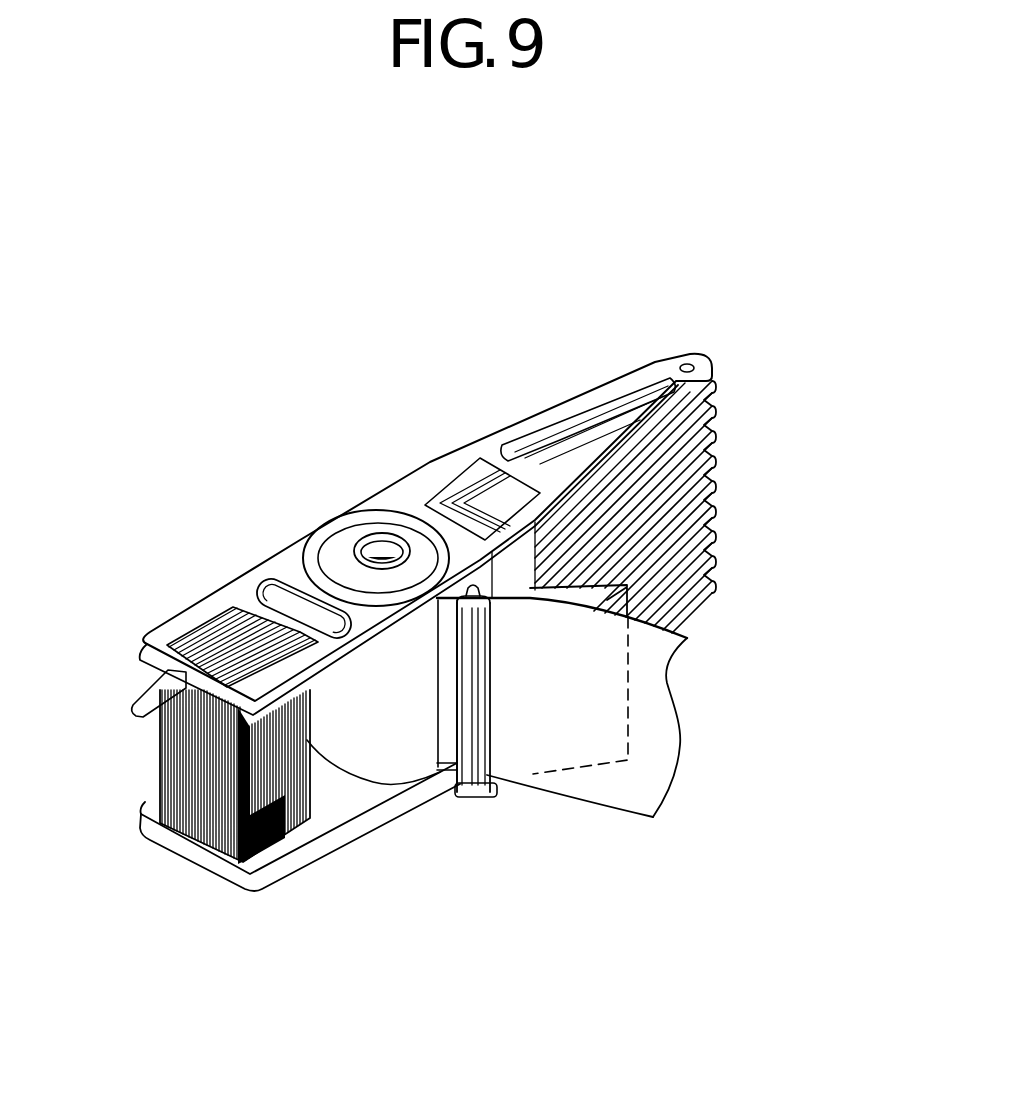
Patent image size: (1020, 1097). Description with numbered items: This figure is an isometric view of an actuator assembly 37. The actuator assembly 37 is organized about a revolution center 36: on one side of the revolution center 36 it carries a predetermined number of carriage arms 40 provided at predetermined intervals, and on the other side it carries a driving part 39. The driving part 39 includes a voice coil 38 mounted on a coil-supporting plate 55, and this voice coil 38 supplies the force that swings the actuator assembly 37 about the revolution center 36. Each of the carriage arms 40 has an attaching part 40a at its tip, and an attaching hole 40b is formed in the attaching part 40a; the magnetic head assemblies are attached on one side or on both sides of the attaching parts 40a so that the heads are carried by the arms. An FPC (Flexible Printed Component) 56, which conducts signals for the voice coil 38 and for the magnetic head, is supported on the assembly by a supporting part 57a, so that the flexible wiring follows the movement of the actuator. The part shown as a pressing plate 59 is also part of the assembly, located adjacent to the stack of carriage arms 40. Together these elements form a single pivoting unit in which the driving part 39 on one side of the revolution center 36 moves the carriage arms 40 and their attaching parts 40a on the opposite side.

The revolution center 36 is at (365, 548).
The actuator assembly 37 is at (384, 488).
The voice coil 38 is at (187, 838).
The driving part 39 is at (178, 610).
The carriage arms 40 is at (477, 447).
The attaching part 40a is at (680, 357).
The attaching hole 40b is at (692, 357).
The coil-supporting plate 55 is at (373, 828).
The FPC (Flexible Printed Component) 56 is at (650, 800).
The supporting part 57a is at (487, 684).
The pressing plate 59 is at (676, 607).